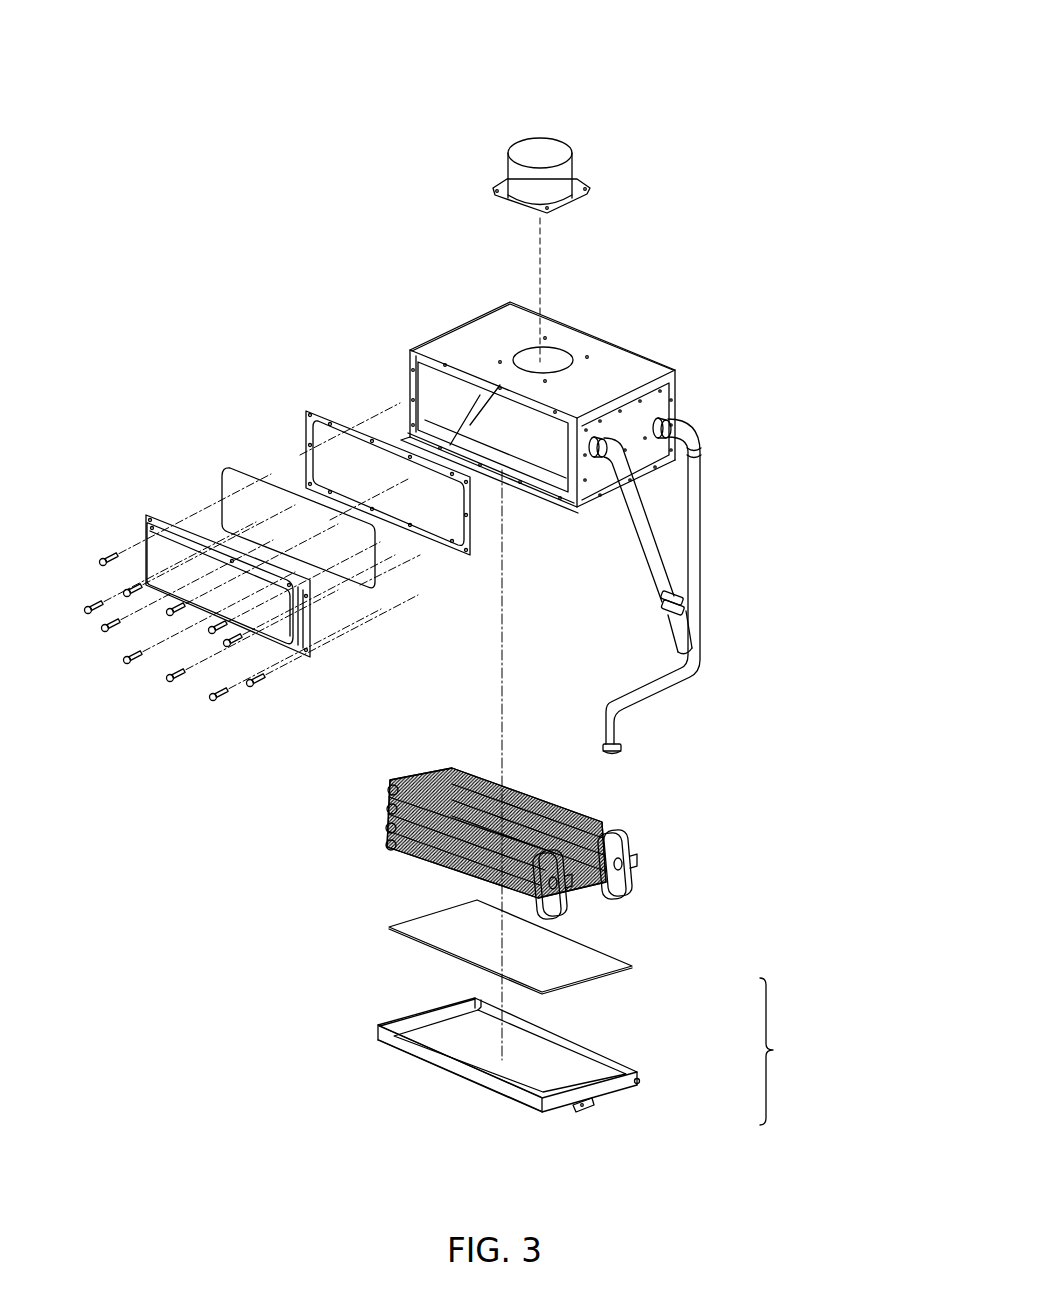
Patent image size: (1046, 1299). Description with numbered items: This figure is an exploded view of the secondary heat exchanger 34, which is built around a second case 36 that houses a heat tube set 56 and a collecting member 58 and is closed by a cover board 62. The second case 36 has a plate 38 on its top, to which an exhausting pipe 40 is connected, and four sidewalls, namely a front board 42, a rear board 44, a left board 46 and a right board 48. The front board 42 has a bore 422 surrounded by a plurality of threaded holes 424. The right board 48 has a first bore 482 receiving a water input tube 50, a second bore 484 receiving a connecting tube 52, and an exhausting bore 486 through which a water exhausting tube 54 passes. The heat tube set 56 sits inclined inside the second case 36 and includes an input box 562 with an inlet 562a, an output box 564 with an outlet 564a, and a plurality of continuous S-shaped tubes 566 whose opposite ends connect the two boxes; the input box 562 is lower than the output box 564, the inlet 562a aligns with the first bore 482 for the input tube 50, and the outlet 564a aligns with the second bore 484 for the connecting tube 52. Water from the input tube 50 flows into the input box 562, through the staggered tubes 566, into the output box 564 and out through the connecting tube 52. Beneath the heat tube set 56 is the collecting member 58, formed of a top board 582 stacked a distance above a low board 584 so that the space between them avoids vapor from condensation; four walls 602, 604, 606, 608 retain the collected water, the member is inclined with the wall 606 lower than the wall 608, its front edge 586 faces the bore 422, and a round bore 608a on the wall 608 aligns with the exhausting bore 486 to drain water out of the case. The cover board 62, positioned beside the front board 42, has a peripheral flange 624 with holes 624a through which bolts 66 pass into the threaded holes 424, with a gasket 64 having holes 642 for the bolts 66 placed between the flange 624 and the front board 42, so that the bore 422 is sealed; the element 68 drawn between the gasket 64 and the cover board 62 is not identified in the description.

The secondary heat exchanger 34 is at (748, 130).
The second case 36 is at (660, 360).
The plate 38 is at (490, 318).
The exhausting pipe 40 is at (560, 173).
The front board 42 is at (420, 360).
The bore 422 is at (413, 378).
The threaded holes 424 is at (430, 375).
The rear board 44 is at (600, 337).
The left board 46 is at (427, 403).
The right board 48 is at (657, 402).
The first bore 482 is at (668, 420).
The second bore 484 is at (600, 458).
The exhausting bore 486 is at (698, 448).
The water input tube 50 is at (698, 555).
The connecting tube 52 is at (653, 558).
The water exhausting tube 54 is at (679, 465).
The heat tube set 56 is at (603, 812).
The input box 562 is at (627, 843).
The inlet 562a is at (625, 868).
The output box 564 is at (549, 898).
The outlet 564a is at (555, 880).
The continuous S-shaped tubes 566 is at (525, 795).
The collecting member 58 is at (784, 1051).
The top board 582 is at (580, 968).
The low board 584 is at (638, 1065).
The front edge 586 is at (480, 1083).
The wall 602 is at (408, 1048).
The wall 604 is at (597, 1073).
The wall 606 is at (394, 1027).
The wall 608 is at (553, 1100).
The round bore 608a is at (637, 1086).
The cover board 62 is at (315, 612).
The flange 624 is at (152, 523).
The holes 624a is at (165, 523).
The gasket 64 is at (306, 413).
The holes 642 is at (305, 422).
The bolts 66 is at (257, 684).
The insulation plate 68 is at (353, 563).